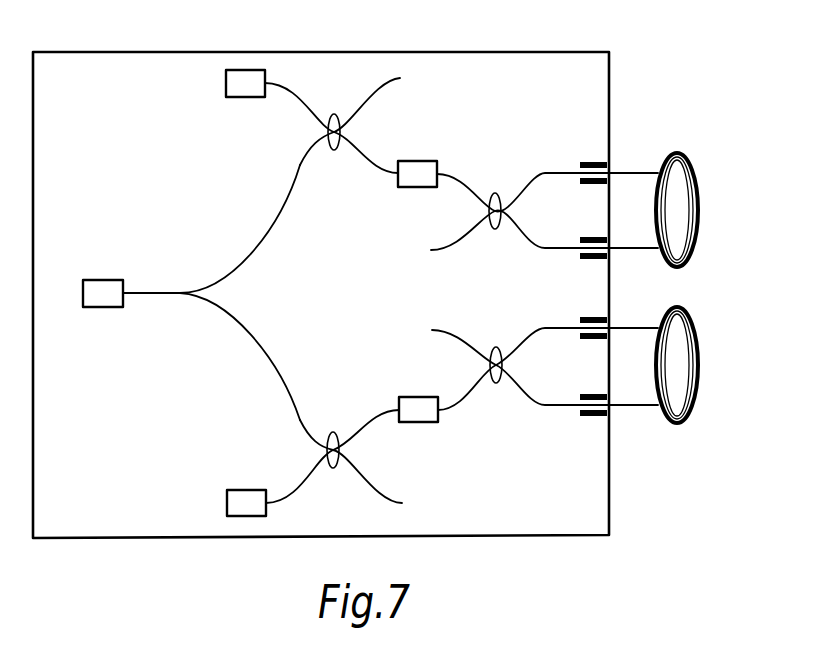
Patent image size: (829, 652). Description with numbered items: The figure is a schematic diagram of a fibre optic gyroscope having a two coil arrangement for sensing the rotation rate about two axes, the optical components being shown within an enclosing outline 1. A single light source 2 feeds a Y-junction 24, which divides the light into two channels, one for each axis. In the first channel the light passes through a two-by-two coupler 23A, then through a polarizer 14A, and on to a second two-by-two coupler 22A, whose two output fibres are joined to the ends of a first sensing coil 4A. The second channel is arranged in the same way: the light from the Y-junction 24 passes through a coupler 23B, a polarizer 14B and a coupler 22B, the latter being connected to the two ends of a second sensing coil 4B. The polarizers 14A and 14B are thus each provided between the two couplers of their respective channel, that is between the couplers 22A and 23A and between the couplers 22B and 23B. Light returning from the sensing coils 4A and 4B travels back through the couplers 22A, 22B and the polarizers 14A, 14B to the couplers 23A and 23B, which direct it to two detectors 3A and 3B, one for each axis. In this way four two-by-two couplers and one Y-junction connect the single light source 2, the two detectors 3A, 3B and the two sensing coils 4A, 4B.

The housing 1 is at (108, 72).
The light source 2 is at (100, 280).
The Y-junction 24 is at (152, 292).
The detector 3A is at (226, 82).
The detector 3B is at (227, 503).
The 2×2 coupler 23A is at (335, 151).
The 2×2 coupler 23B is at (333, 431).
The polarizer 14A is at (415, 160).
The polarizer 14B is at (420, 424).
The 2×2 coupler 22A is at (496, 191).
The 2×2 coupler 22B is at (497, 386).
The sensing coil 4A is at (699, 188).
The sensing coil 4B is at (699, 343).